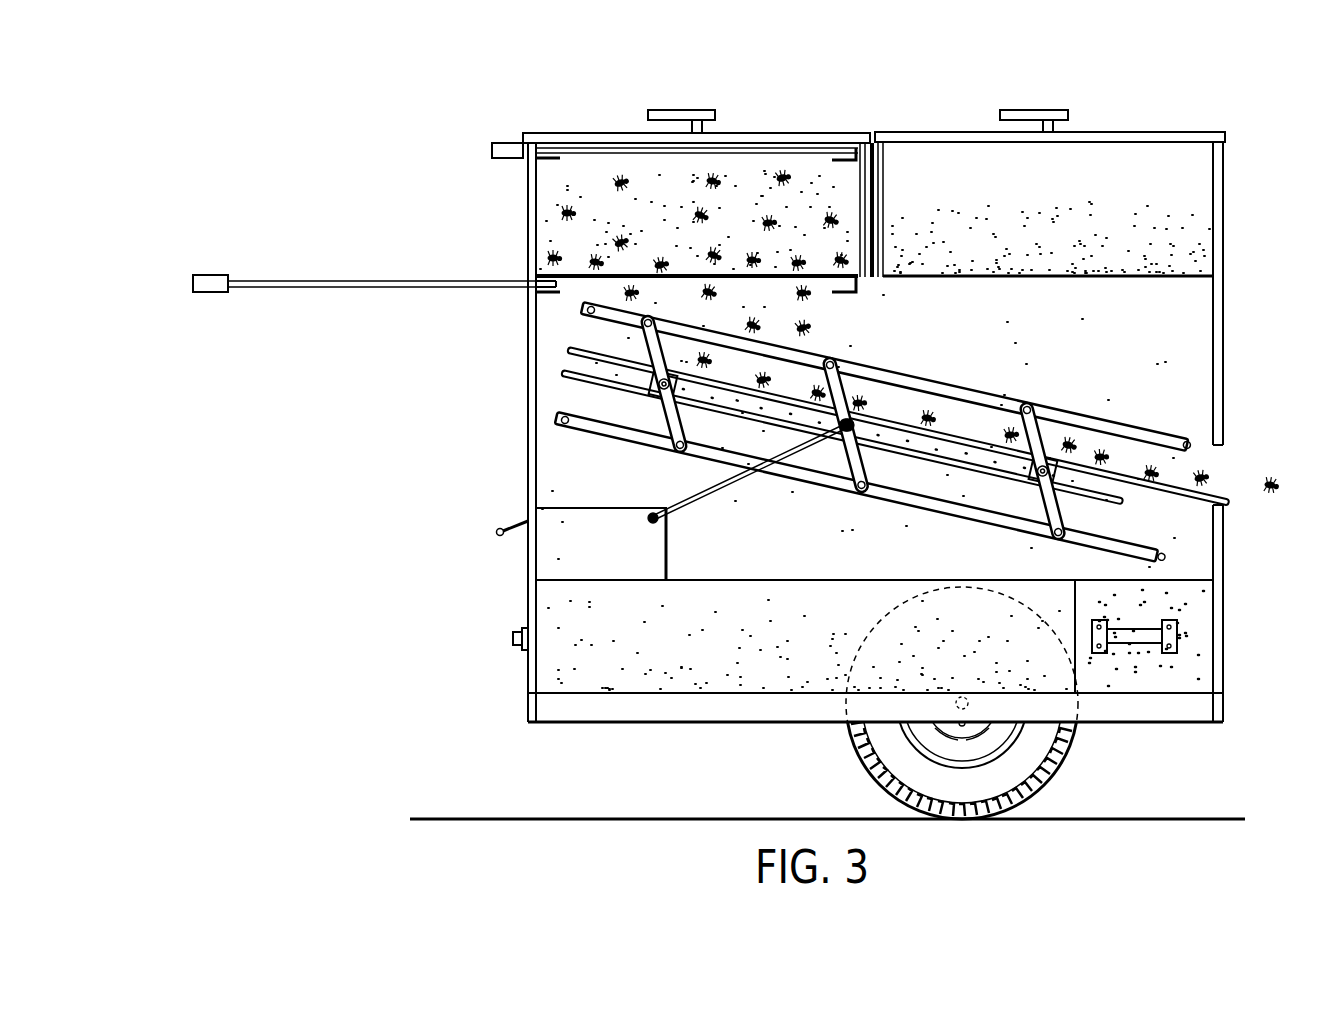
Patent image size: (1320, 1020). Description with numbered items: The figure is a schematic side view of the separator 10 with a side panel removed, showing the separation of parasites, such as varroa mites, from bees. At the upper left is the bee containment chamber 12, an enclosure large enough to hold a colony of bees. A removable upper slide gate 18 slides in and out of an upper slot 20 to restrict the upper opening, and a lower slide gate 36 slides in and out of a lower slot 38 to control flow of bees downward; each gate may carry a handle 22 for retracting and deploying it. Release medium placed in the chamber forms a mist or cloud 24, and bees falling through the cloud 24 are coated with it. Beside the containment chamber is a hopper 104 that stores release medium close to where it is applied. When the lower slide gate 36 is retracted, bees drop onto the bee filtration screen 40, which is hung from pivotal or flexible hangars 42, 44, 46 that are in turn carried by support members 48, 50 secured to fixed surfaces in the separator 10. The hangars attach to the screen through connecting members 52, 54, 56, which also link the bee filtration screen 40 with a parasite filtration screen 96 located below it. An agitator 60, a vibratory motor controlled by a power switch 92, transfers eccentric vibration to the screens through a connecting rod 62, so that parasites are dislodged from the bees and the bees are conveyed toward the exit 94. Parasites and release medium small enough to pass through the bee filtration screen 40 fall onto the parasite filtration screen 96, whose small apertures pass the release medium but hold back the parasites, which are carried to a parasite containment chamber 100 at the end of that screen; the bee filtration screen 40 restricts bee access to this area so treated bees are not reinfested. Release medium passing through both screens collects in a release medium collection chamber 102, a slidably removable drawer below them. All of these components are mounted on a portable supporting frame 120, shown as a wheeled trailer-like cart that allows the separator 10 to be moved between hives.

The separator 10 is at (360, 238).
The bee containment chamber 12 is at (733, 178).
The upper slide gate 18 is at (628, 148).
The upper slot 20 is at (527, 163).
The handle 22 is at (512, 142).
The cloud 24 is at (808, 176).
The lower slide gate 36 is at (275, 288).
The lower slot 38 is at (528, 290).
The bee filtration screen 40 is at (940, 430).
The hangar 42 is at (668, 422).
The hangar 44 is at (855, 462).
The hangar 46 is at (1040, 432).
The support member 48 is at (1117, 423).
The support member 50 is at (1140, 542).
The connecting member 52 is at (655, 386).
The connecting member 54 is at (870, 412).
The connecting member 56 is at (1052, 453).
The agitator 60 is at (573, 553).
The connecting rod 62 is at (690, 506).
The power switch 92 is at (500, 536).
The exit 94 is at (1225, 465).
The parasite filtration screen 96 is at (925, 460).
The parasite containment chamber 100 is at (1192, 610).
The release medium collection chamber 102 is at (690, 655).
The hopper 104 is at (1125, 158).
The portable supporting frame 120 is at (1223, 708).